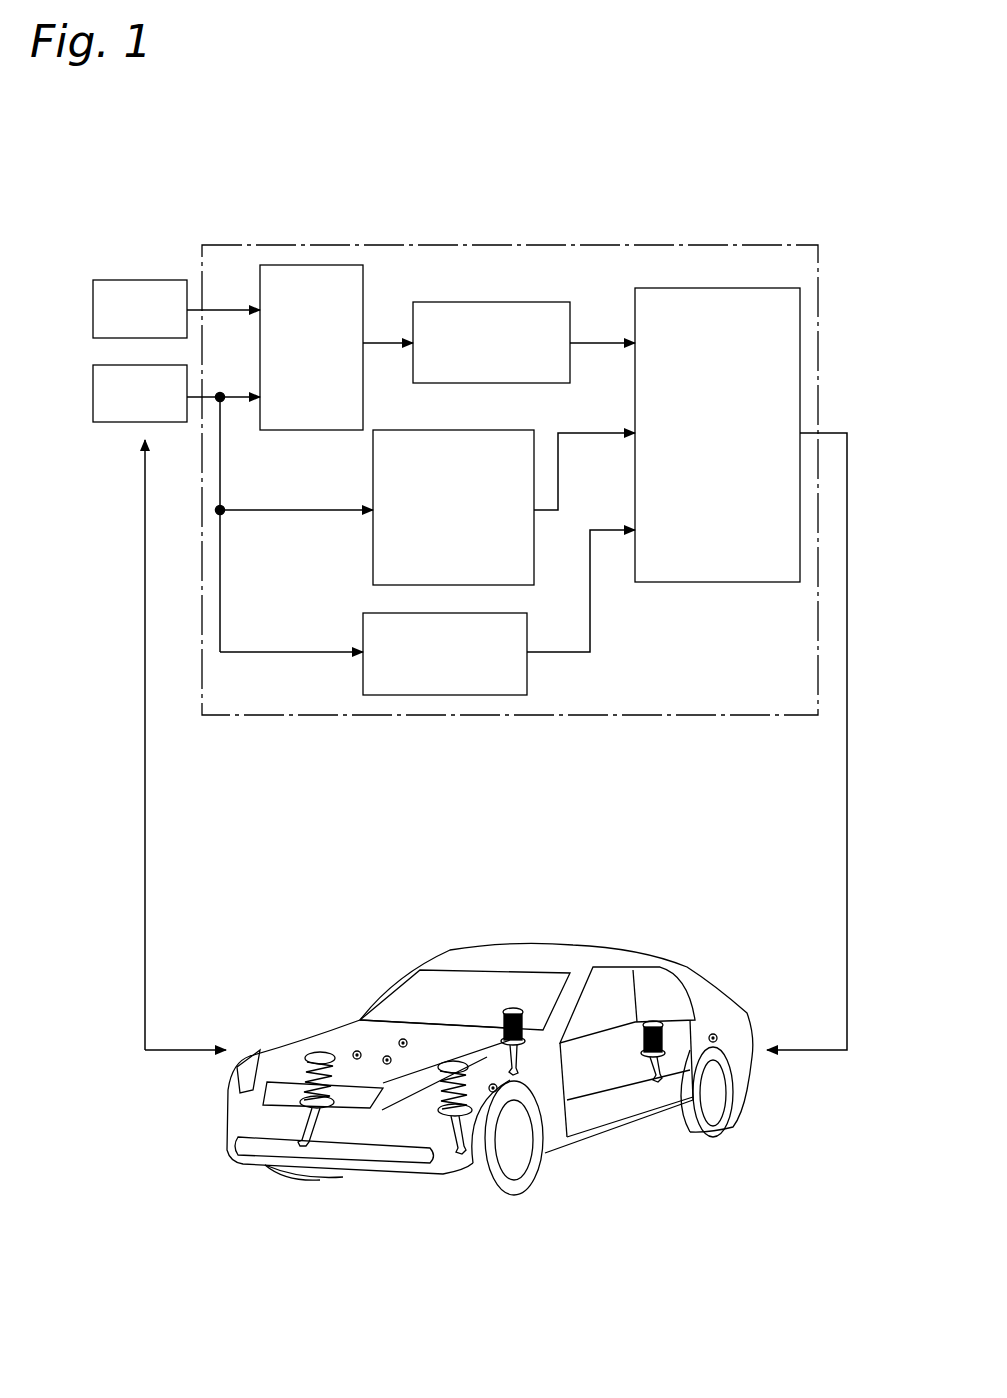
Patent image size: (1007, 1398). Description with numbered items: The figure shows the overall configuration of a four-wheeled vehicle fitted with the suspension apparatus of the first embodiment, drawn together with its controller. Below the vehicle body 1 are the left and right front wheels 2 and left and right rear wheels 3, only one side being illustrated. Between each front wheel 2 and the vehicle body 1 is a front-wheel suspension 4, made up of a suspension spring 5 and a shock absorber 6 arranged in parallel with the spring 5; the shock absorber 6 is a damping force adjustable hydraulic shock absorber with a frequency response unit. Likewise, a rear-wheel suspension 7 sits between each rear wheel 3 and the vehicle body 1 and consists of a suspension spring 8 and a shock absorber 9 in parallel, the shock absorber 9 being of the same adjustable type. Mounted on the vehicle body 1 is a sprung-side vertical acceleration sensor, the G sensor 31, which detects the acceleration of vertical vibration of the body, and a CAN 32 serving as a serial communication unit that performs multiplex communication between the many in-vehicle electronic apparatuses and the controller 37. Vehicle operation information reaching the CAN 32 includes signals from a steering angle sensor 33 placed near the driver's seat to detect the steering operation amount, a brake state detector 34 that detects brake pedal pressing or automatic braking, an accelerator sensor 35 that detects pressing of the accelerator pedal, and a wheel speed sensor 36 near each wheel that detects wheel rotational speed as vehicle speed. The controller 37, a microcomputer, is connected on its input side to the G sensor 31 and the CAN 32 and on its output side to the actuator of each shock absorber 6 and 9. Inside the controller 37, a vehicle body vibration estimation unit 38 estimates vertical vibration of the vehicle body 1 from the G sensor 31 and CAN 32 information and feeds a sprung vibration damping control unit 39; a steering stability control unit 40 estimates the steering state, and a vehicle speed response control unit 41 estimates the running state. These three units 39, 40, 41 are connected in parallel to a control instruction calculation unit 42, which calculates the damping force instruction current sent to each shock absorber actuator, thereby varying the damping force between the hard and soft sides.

The vehicle body 1 is at (573, 945).
The front wheel 2 is at (300, 1177).
The rear wheel 3 is at (733, 1100).
The front-wheel suspension 4 is at (331, 1106).
The suspension spring 5 is at (303, 1070).
The shock absorber 6 is at (297, 1113).
The rear-wheel suspension 7 is at (586, 1045).
The suspension spring 8 is at (507, 1035).
The shock absorber 9 is at (520, 1080).
The G sensor 31 is at (122, 280).
The CAN 32 is at (130, 425).
The steering angle sensor 33 is at (401, 1039).
The brake state detector 34 is at (385, 1056).
The accelerator sensor 35 is at (354, 1051).
The wheel speed sensor 36 is at (717, 1035).
The controller 37 is at (590, 243).
The vehicle body vibration estimation unit 38 is at (308, 265).
The sprung vibration damping control unit 39 is at (473, 302).
The steering stability control unit 40 is at (368, 530).
The vehicle speed response control unit 41 is at (432, 698).
The control instruction calculation unit 42 is at (725, 584).